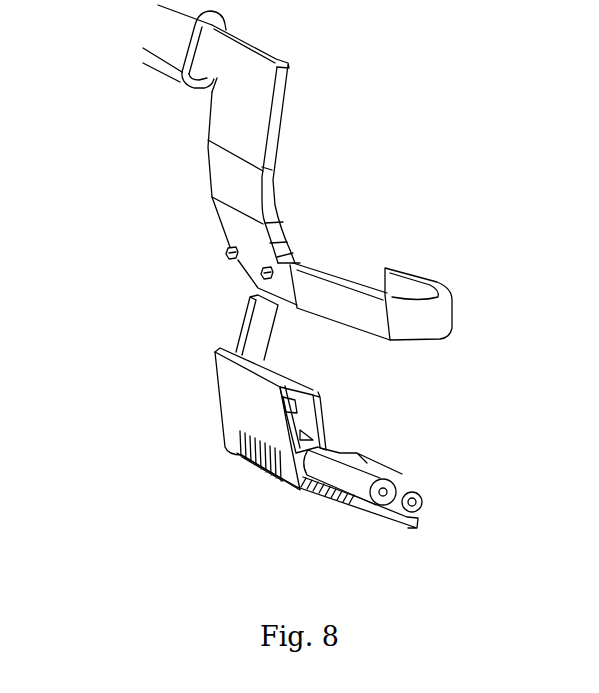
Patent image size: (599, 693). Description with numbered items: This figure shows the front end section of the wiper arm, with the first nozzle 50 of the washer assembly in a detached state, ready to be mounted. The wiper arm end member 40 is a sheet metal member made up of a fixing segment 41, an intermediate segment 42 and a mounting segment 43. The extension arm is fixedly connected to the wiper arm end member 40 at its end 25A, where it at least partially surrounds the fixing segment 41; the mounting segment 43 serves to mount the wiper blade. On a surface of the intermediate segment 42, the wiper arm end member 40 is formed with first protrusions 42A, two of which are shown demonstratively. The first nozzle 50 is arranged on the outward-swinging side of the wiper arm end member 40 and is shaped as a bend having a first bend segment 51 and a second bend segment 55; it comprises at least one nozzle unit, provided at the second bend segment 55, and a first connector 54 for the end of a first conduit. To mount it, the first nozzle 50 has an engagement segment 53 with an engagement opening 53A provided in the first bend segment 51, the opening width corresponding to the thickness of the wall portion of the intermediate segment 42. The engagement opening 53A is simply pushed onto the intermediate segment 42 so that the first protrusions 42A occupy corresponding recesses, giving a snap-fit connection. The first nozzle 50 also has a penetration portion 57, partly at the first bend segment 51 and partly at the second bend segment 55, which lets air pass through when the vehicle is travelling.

The end of the extension arm 25A is at (160, 43).
The wiper arm end member 40 is at (315, 111).
The fixing segment 41 is at (212, 90).
The intermediate segment 42 is at (228, 213).
The first protrusion 42A is at (226, 256).
The mounting segment 43 is at (367, 317).
The first nozzle 50 is at (195, 460).
The first bend segment 51 is at (235, 436).
The engagement segment 53 is at (317, 438).
The engagement opening 53A is at (313, 407).
The first connector 54 is at (260, 325).
The second bend segment 55 is at (352, 505).
The penetration portion 57 is at (245, 465).